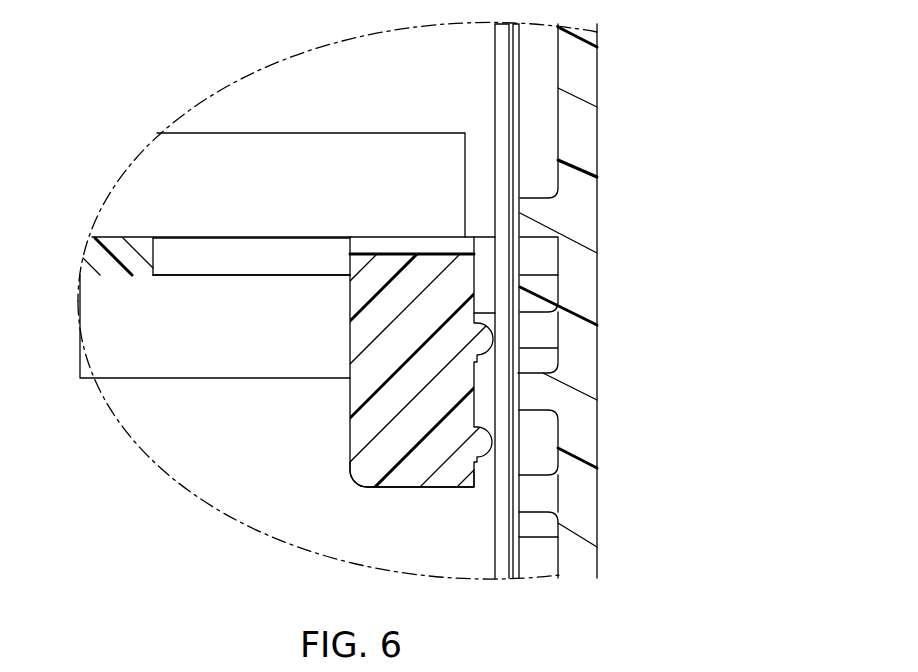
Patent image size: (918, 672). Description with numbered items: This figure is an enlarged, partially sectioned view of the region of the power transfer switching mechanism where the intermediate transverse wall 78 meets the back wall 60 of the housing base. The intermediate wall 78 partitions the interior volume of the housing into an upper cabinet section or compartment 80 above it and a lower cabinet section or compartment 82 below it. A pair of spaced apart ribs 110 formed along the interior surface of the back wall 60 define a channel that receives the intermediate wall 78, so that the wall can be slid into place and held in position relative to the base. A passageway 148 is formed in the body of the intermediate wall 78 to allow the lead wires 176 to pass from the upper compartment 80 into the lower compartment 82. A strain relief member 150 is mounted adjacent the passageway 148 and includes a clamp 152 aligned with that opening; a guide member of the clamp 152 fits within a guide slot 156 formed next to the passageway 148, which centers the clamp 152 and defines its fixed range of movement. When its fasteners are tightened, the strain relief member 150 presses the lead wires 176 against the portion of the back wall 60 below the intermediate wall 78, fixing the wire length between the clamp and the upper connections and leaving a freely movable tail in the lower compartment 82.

The back wall 60 is at (583, 352).
The intermediate transverse wall 78 is at (97, 258).
The upper cabinet section or compartment 80 is at (280, 90).
The lower cabinet section or compartment 82 is at (283, 518).
The ribs 110 is at (150, 170).
The passageway 148 is at (403, 247).
The strain relief member 150 is at (331, 399).
The clamp 152 is at (407, 473).
The guide slot 156 is at (310, 245).
The lead wires 176 is at (493, 558).